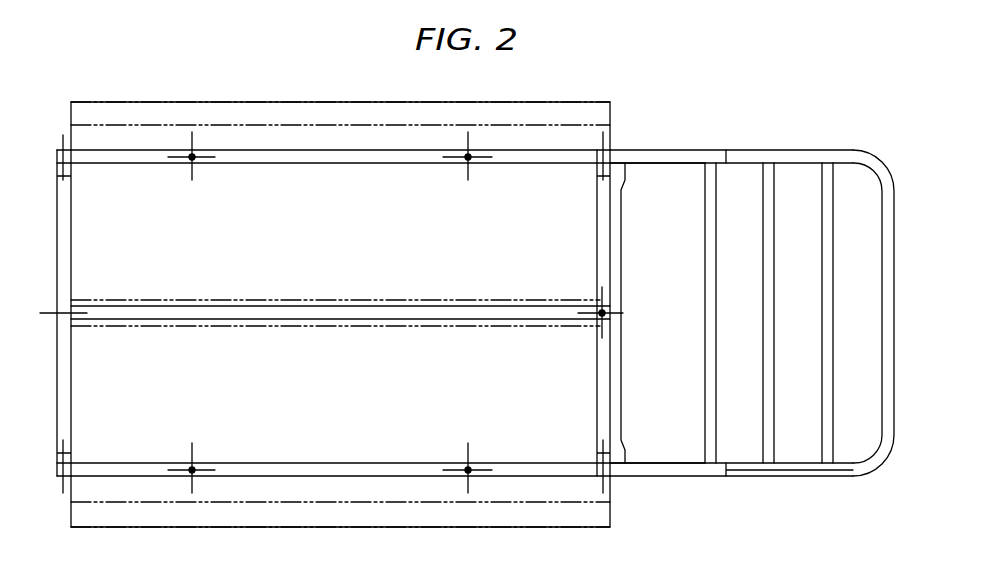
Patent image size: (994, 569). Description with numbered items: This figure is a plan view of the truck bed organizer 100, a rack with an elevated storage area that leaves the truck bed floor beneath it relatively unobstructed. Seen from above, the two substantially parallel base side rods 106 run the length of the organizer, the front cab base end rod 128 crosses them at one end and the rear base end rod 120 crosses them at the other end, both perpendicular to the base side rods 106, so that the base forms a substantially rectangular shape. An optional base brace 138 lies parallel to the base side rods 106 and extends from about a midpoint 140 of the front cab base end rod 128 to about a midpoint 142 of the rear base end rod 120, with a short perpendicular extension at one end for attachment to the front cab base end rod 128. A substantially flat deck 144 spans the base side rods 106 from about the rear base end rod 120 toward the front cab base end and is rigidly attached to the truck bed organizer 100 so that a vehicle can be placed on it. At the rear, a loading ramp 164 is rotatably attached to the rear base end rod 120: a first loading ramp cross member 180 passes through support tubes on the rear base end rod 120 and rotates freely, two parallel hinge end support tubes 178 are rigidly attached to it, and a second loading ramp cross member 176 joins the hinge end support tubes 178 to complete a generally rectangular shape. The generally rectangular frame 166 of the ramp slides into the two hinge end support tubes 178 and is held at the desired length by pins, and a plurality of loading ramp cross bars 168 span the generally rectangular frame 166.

The truck bed organizer 100 is at (630, 136).
The base side rod 106 is at (265, 163).
The rear base end rod 120 is at (597, 219).
The front cab base end rod 128 is at (71, 215).
The base brace 138 is at (293, 320).
The midpoint of the front cab base end rod 140 is at (71, 330).
The midpoint of the rear base end rod 142 is at (597, 326).
The deck 144 is at (612, 490).
The loading ramp 164 is at (748, 153).
The generally rectangular frame 166 is at (733, 478).
The loading ramp cross bars 168 is at (775, 342).
The second loading ramp cross member 176 is at (716, 357).
The hinge end support tubes 178 is at (643, 163).
The first loading ramp cross member 180 is at (622, 290).